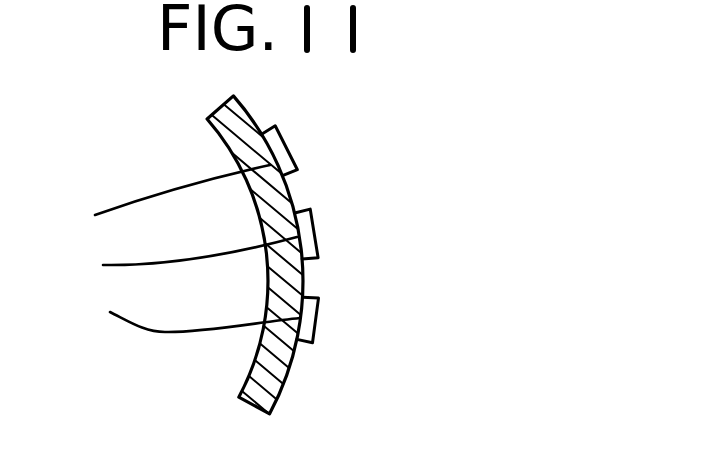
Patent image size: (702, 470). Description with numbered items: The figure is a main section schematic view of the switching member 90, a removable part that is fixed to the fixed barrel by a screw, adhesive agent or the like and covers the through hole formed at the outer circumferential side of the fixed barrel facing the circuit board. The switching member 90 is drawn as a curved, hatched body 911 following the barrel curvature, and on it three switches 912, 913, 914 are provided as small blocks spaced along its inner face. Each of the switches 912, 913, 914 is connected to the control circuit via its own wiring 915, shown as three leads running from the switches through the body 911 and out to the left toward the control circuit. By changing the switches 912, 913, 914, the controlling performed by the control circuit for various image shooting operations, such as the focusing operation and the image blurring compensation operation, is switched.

The switching member 90 is at (362, 270).
The arc-shaped body 911 is at (278, 378).
The switch 912 is at (283, 153).
The switch 913 is at (307, 230).
The switch 914 is at (313, 312).
The wiring 915 is at (152, 192).